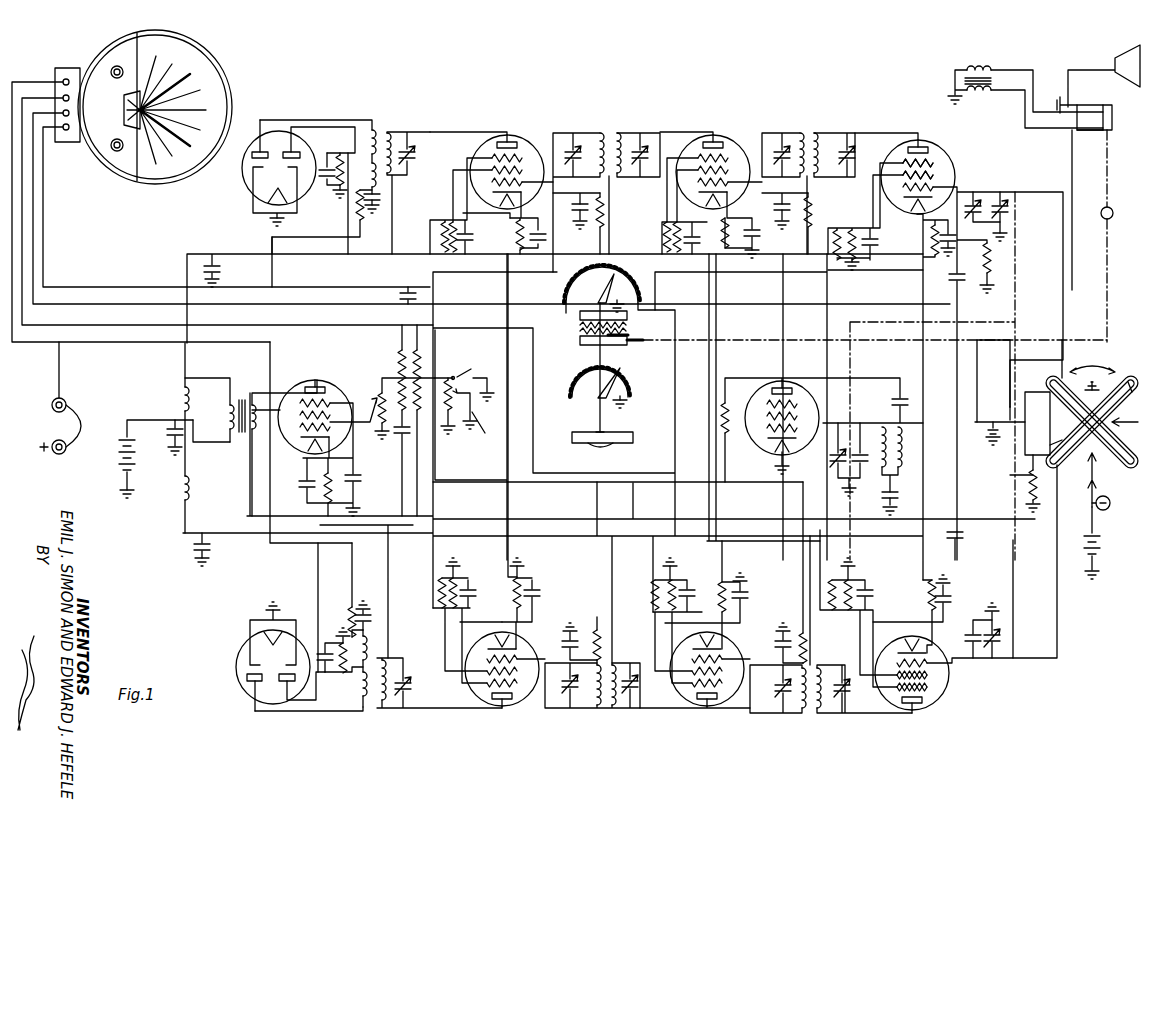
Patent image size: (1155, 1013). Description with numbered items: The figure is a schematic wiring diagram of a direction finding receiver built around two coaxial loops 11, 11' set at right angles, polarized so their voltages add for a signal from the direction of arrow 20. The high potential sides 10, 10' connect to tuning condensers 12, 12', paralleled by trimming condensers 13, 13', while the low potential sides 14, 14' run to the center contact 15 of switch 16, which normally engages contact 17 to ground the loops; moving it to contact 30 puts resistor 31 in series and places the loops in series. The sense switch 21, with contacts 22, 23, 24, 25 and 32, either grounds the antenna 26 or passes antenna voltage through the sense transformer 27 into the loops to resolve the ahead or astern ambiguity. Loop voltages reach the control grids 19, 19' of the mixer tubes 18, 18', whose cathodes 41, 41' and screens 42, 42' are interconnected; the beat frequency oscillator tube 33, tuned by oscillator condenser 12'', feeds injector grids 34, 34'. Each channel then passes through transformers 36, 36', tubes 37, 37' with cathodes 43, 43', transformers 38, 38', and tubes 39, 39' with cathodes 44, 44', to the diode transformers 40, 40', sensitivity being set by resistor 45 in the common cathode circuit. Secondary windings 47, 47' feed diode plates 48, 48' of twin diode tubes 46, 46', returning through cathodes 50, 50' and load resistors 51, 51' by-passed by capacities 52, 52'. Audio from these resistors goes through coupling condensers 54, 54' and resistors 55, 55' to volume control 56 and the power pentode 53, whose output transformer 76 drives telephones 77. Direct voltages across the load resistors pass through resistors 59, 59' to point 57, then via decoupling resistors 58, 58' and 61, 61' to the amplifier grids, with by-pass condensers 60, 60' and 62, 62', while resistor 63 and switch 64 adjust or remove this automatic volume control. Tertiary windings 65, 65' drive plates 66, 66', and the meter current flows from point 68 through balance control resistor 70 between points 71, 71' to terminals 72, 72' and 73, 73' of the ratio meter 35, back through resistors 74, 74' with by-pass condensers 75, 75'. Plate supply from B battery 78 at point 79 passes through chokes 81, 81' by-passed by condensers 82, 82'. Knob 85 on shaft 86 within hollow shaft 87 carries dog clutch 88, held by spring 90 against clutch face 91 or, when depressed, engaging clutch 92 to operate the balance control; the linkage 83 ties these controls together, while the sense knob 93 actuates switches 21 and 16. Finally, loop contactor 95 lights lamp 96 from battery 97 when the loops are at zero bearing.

The high potential side of loop 10 is at (1088, 405).
The high potential side of loop 10' is at (1050, 561).
The loop 11 is at (1092, 426).
The loop 11' is at (1129, 376).
The tuning condenser 12 is at (1018, 216).
The tuning condenser 12' is at (1013, 630).
The oscillator condenser 12'' is at (866, 469).
The trimming condenser 13 is at (983, 205).
The trimming condenser 13' is at (978, 647).
The low potential side of loop 14 is at (1041, 423).
The low potential side of loop 14' is at (1044, 438).
The center contact 15 is at (976, 424).
The relay or switch 16 is at (993, 381).
The contact 17 is at (993, 440).
The mixer vacuum tube 18 is at (959, 346).
The mixer vacuum tube 18' is at (944, 637).
The control grid 19 is at (946, 179).
The control grid 19' is at (944, 683).
The arrow 20 is at (1132, 415).
The sense switch 21 is at (1112, 118).
The contact 22 is at (1110, 107).
The contact 23 is at (1098, 104).
The contact 24 is at (1078, 138).
The contact 25 is at (1110, 127).
The antenna 26 is at (1116, 63).
The sense transformer 27 is at (990, 66).
The contact 30 is at (1008, 418).
The resistor 31 is at (1010, 476).
The contact 32 is at (1080, 120).
The beat frequency oscillator tube 33 is at (772, 447).
The injector grid 34 is at (946, 163).
The injector grid 34' is at (944, 699).
The ratio meter 35 is at (215, 70).
The transformer 36 is at (808, 177).
The transformer 36' is at (831, 640).
The vacuum tube 37 is at (711, 175).
The vacuum tube 37' is at (695, 651).
The transformer 38 is at (606, 184).
The transformer 38' is at (592, 703).
The vacuum tube 39 is at (491, 175).
The vacuum tube 39' is at (489, 651).
The diode transformer 40 is at (406, 174).
The diode transformer 40' is at (436, 700).
The cathode 41 is at (892, 242).
The cathode 41' is at (912, 614).
The screen 42 is at (865, 216).
The screen 42' is at (858, 608).
The cathode 43 is at (740, 225).
The cathode 43' is at (710, 595).
The cathode 44 is at (530, 223).
The cathode 44' is at (526, 603).
The sensitivity control resistor 45 is at (614, 388).
The twin diode rectifier tube 46 is at (316, 109).
The twin diode rectifier tube 46' is at (309, 724).
The secondary winding 47 is at (356, 146).
The secondary winding 47' is at (352, 683).
The diode plate 48 is at (250, 139).
The diode plate 48' is at (237, 700).
The cathode 50 is at (263, 178).
The cathode 50' is at (260, 653).
The resistor 51 is at (329, 203).
The resistor 51' is at (340, 608).
The capacity 52 is at (325, 159).
The capacity 52' is at (327, 672).
The power amplifier pentode 53 is at (315, 380).
The coupling condenser 54 is at (394, 286).
The coupling condenser 54' is at (391, 449).
The resistor 55 is at (381, 420).
The resistor 55' is at (393, 420).
The audio volume control resistor 56 is at (378, 392).
The point 57 is at (453, 368).
The radio frequency decoupling resistor 58 is at (796, 223).
The radio frequency decoupling resistor 58' is at (787, 572).
The resistor 59 is at (471, 407).
The resistor 59' is at (458, 420).
The by-pass condenser 60 is at (785, 203).
The by-pass condenser 60' is at (779, 643).
The de-coupling resistor 61 is at (590, 223).
The de-coupling resistor 61' is at (583, 628).
The by-pass condenser 62 is at (576, 202).
The by-pass condenser 62' is at (573, 642).
The volume control resistor 63 is at (484, 428).
The switch 64 is at (476, 376).
The tertiary winding 65 is at (394, 179).
The tertiary winding 65' is at (390, 644).
The plate 66 is at (319, 123).
The plate 66' is at (302, 707).
The point 68 is at (606, 296).
The balance control resistor 70 is at (624, 286).
The point 71 is at (553, 298).
The point 71' is at (662, 297).
The point 72 is at (491, 207).
The point 72' is at (227, 183).
The point 73 is at (236, 205).
The point 73' is at (141, 191).
The resistor 74 is at (344, 222).
The resistor 74' is at (383, 590).
The condenser 75 is at (390, 206).
The capacitor 75' is at (386, 615).
The audio output transformer 76 is at (243, 398).
The telephones 77 is at (75, 411).
The B battery 78 is at (119, 468).
The point 79 is at (174, 422).
The radio frequency choke 81 is at (207, 409).
The radio frequency choke 81' is at (203, 504).
The condenser 82 is at (555, 290).
The condenser 82' is at (218, 549).
The shaft coupling 83 is at (1002, 320).
The knob 85 is at (590, 446).
The shaft 86 is at (598, 425).
The hollow shaft 87 is at (598, 365).
The double faced dog clutch 88 is at (580, 333).
The spring 90 is at (632, 336).
The clutch face 91 is at (582, 346).
The clutch 92 is at (580, 322).
The sense switch control knob 93 is at (1113, 212).
The switch or loop contactor 95 is at (1090, 480).
The lamp 96 is at (1108, 506).
The battery 97 is at (1101, 551).